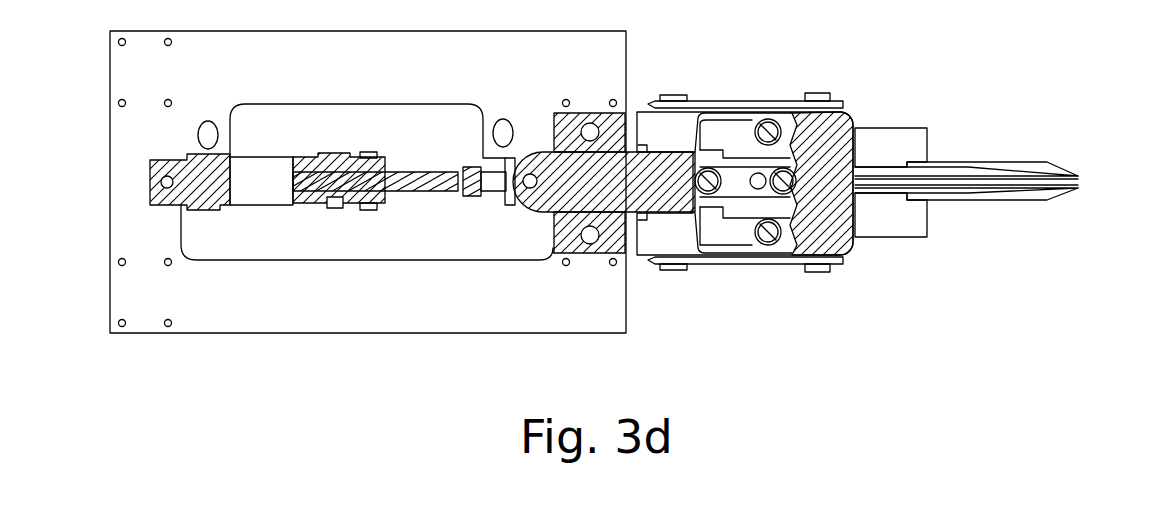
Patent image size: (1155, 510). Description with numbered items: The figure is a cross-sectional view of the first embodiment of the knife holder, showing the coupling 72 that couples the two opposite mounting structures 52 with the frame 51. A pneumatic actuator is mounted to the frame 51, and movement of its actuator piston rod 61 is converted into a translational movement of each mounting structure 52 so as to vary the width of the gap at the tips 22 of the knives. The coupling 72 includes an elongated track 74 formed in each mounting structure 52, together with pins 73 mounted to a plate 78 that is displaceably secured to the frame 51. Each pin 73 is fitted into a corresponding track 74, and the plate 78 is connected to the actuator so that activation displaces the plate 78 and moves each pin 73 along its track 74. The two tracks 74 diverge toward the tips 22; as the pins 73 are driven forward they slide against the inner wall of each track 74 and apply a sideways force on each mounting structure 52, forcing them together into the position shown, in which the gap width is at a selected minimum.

The tips 22 is at (1080, 176).
The frame 51 is at (580, 300).
The mounting structure 52 is at (898, 130).
The actuator piston rod 61 is at (409, 183).
The coupling 72 is at (745, 216).
The pin 73 is at (765, 118).
The track 74 is at (723, 133).
The plate 78 is at (651, 172).